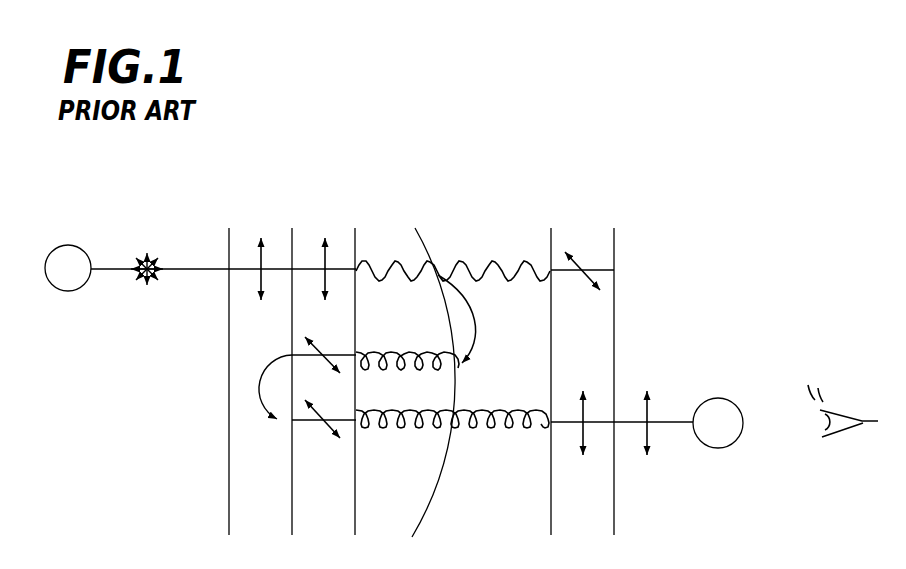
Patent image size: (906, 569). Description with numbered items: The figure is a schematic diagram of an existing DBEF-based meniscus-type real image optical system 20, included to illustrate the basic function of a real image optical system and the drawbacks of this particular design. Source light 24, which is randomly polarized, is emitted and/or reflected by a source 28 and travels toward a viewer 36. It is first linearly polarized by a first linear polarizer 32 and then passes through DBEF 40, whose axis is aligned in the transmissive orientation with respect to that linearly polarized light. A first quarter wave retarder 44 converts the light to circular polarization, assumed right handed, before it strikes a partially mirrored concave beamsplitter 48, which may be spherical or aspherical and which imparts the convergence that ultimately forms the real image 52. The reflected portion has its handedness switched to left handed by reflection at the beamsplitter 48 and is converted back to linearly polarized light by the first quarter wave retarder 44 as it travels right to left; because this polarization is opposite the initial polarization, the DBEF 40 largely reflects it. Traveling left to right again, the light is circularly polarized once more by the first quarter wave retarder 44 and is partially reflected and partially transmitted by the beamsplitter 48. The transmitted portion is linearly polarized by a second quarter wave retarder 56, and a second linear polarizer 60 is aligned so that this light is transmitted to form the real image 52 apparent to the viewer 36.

The DBEF-based optical system 20 is at (168, 188).
The source light 24 is at (155, 304).
The source 28 is at (83, 300).
The first linear polarizer 32 is at (227, 228).
The viewer 36 is at (821, 447).
The DBEF 40 is at (290, 228).
The first quarter wave retarder 44 is at (354, 228).
The partially mirrored concave beamsplitter 48 is at (430, 232).
The real image 52 is at (711, 450).
The second quarter wave retarder 56 is at (555, 229).
The second linear polarizer 60 is at (618, 231).